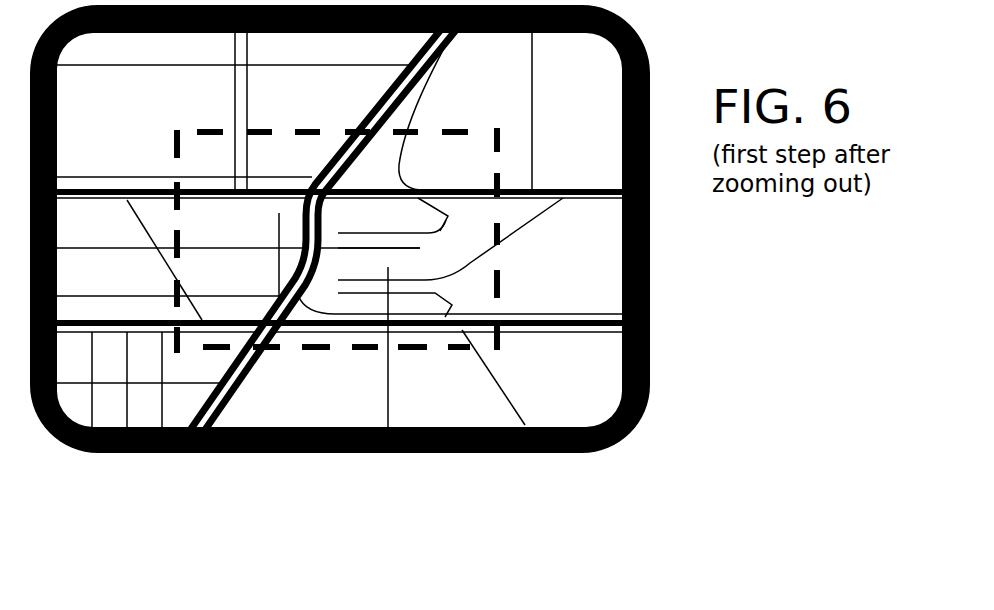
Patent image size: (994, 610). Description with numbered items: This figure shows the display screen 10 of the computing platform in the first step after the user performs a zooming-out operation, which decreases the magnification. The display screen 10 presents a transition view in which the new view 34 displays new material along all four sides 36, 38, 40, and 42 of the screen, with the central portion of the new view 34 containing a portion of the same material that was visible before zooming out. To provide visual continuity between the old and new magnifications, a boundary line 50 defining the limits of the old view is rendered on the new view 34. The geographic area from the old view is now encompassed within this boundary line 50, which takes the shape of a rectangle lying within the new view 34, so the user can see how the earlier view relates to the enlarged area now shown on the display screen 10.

The display screen 10 is at (661, 298).
The new view 34 is at (134, 58).
The side of the screen 36 is at (300, 40).
The side of the screen 38 is at (367, 350).
The side of the screen 40 is at (174, 147).
The side of the screen 42 is at (619, 278).
The boundary line 50 is at (503, 145).